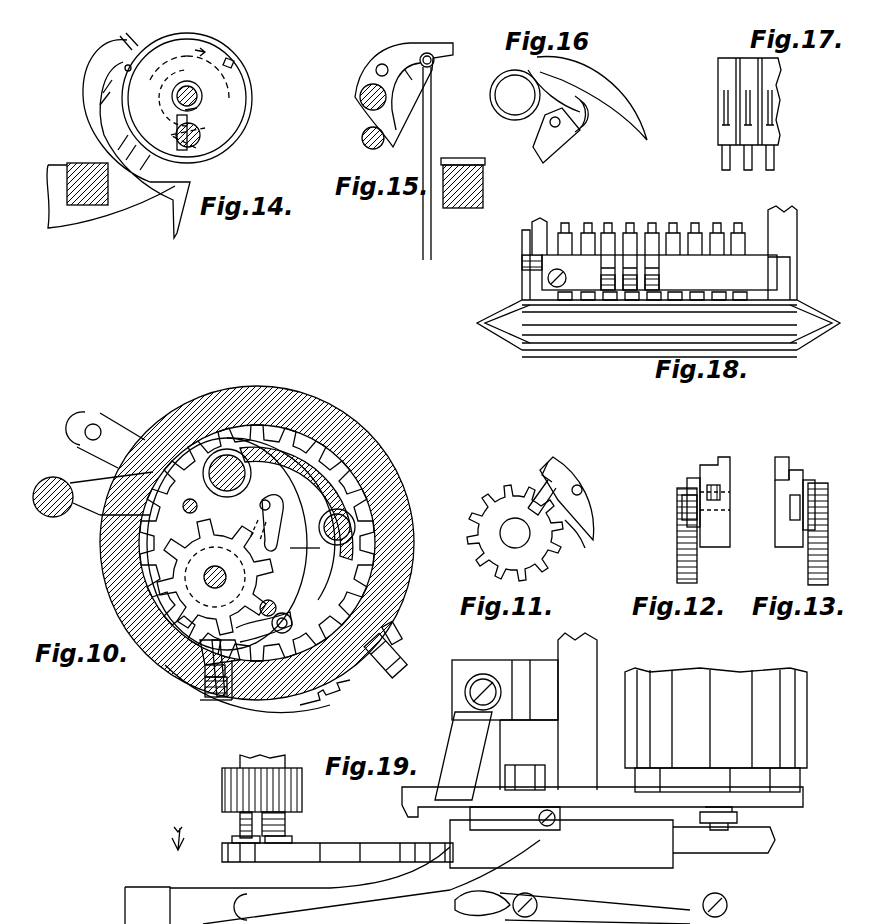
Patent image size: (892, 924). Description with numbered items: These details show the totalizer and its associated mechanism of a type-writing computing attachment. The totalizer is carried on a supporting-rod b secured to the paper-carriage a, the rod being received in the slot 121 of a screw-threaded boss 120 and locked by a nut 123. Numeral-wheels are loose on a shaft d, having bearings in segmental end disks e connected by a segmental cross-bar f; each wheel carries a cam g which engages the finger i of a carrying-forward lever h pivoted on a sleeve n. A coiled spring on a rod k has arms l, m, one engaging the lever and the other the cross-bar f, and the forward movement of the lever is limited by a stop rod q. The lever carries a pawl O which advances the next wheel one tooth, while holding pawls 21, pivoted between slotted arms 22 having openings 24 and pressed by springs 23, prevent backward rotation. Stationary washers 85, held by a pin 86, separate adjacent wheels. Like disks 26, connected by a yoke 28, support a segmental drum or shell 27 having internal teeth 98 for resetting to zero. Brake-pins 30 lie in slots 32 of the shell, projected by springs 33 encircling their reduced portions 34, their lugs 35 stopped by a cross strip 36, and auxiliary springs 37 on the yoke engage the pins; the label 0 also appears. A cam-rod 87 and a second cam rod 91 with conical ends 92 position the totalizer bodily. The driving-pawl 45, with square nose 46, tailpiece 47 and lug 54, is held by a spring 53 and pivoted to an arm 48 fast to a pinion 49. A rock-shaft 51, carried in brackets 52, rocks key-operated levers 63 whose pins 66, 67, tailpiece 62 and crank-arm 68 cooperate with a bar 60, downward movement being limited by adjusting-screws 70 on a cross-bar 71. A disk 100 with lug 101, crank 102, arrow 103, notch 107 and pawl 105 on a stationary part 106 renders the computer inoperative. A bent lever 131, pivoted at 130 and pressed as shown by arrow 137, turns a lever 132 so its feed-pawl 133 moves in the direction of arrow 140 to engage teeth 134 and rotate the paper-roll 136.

In FIG. 14, the disk 100 is at (245, 100).
In FIG. 14, the rock-shaft 51 is at (202, 96).
In FIG. 15, the rock-shaft 51 is at (362, 103).
In FIG. 14, the bar 60 is at (201, 135).
In FIG. 15, the bar 60 is at (362, 138).
In FIG. 14, the crank 102 is at (195, 110).
In FIG. 14, the notch 107 is at (235, 62).
In FIG. 14, the pawl 105 is at (144, 33).
In FIG. 14, the arrow 103 is at (186, 53).
In FIG. 14, the stationary part of the frame 106 is at (250, 127).
In FIG. 14, the lug 101 is at (136, 139).
In FIG. 14, the brackets 52 is at (120, 213).
In FIG. 14, the cross-bar 71 is at (88, 205).
In FIG. 15, the cross-bar 71 is at (483, 200).
In FIG. 15, the lever 63 is at (395, 50).
In FIG. 15, the pin 66 is at (377, 67).
In FIG. 15, the crank-arm 68 is at (409, 84).
In FIG. 15, the tailpiece 62 is at (395, 125).
In FIG. 15, the pin 67 is at (430, 52).
In FIG. 15, the adjusting-screws 70 is at (455, 158).
In FIG. 16, the opening 24 is at (508, 105).
In FIG. 17, the opening 24 is at (728, 72).
In FIG. 16, the springs 23 is at (587, 106).
In FIG. 16, the segmental cross-bar f is at (625, 110).
In FIG. 17, the segmental cross-bar f is at (780, 92).
In FIG. 10, the segmental cross-bar f is at (300, 462).
In FIG. 16, the slotted arms 22 is at (578, 128).
In FIG. 17, the slotted arms 22 is at (720, 148).
In FIG. 16, the pawls 21 is at (543, 158).
In FIG. 17, the pawls 21 is at (757, 160).
In FIG. 10, the pawls 21 is at (268, 536).
In FIG. 18, the disks 26 is at (790, 237).
In FIG. 10, the disks 26 is at (143, 515).
In FIG. 18, the cross strip or bar 36 is at (530, 268).
In FIG. 10, the cross strip or bar 36 is at (212, 660).
In FIG. 18, the pins 30 is at (610, 232).
In FIG. 10, the pins 30 is at (200, 645).
In FIG. 18, the reference point 0 is at (685, 213).
In FIG. 18, the springs 33 is at (622, 283).
In FIG. 10, the springs 33 is at (205, 688).
In FIG. 18, the lugs or projections 35 is at (665, 282).
In FIG. 10, the lugs or projections 35 is at (205, 672).
In FIG. 18, the reduced portion 34 is at (740, 292).
In FIG. 10, the reduced portion 34 is at (210, 700).
In FIG. 18, the cam rod or bar 91 is at (562, 345).
In FIG. 18, the conical ends 92 is at (500, 335).
In FIG. 18, the auxiliary springs 37 is at (747, 290).
In FIG. 10, the auxiliary springs 37 is at (292, 702).
In FIG. 10, the segmental drum or shell 27 is at (408, 520).
In FIG. 10, the supporting-rod b is at (205, 400).
In FIG. 10, the cam-rod 87 is at (50, 490).
In FIG. 10, the segmental end disks e is at (160, 530).
In FIG. 10, the spring arm m is at (320, 470).
In FIG. 10, the sleeve n is at (232, 450).
In FIG. 10, the finger i is at (215, 577).
In FIG. 10, the shaft d is at (204, 580).
In FIG. 10, the cam g is at (172, 582).
In FIG. 10, the stationary washers 85 is at (186, 509).
In FIG. 10, the pin or bar 86 is at (192, 500).
In FIG. 10, the rod k is at (355, 527).
In FIG. 10, the spring arm l is at (285, 525).
In FIG. 10, the carrying-forward lever h is at (305, 562).
In FIG. 10, the teeth 98 is at (344, 567).
In FIG. 10, the stop rod or bar q is at (285, 605).
In FIG. 10, the pawl O is at (247, 692).
In FIG. 10, the slots 32 is at (228, 703).
In FIG. 10, the yoke or bar 28 is at (380, 672).
In FIG. 11, the pinion 49 is at (480, 540).
In FIG. 12, the pinion 49 is at (680, 540).
In FIG. 13, the pinion 49 is at (825, 495).
In FIG. 11, the tailpiece 47 is at (588, 520).
In FIG. 13, the tailpiece 47 is at (782, 547).
In FIG. 11, the square nose 46 is at (546, 472).
In FIG. 13, the square nose 46 is at (790, 485).
In FIG. 11, the driving-pawl 45 is at (555, 462).
In FIG. 12, the driving-pawl 45 is at (722, 462).
In FIG. 13, the driving-pawl 45 is at (780, 457).
In FIG. 11, the lug or projection 54 is at (545, 490).
In FIG. 12, the lug or projection 54 is at (705, 470).
In FIG. 13, the lug or projection 54 is at (795, 505).
In FIG. 11, the arm 48 is at (576, 538).
In FIG. 12, the arm 48 is at (690, 510).
In FIG. 13, the arm 48 is at (812, 478).
In FIG. 12, the spring 53 is at (718, 487).
In FIG. 19, the paper-carriage a is at (585, 655).
In FIG. 19, the pivot 130 is at (470, 697).
In FIG. 19, the lever 132 is at (527, 765).
In FIG. 19, the paper-roll 136 is at (735, 672).
In FIG. 19, the feed-pawl 133 is at (600, 893).
In FIG. 19, the teeth 134 is at (800, 808).
In FIG. 19, the arrow 140 is at (655, 894).
In FIG. 19, the bent or curved lever 131 is at (306, 890).
In FIG. 19, the nut 123 is at (302, 800).
In FIG. 19, the slot 121 is at (240, 815).
In FIG. 19, the bosses 120 is at (287, 828).
In FIG. 19, the arrow 137 is at (159, 846).